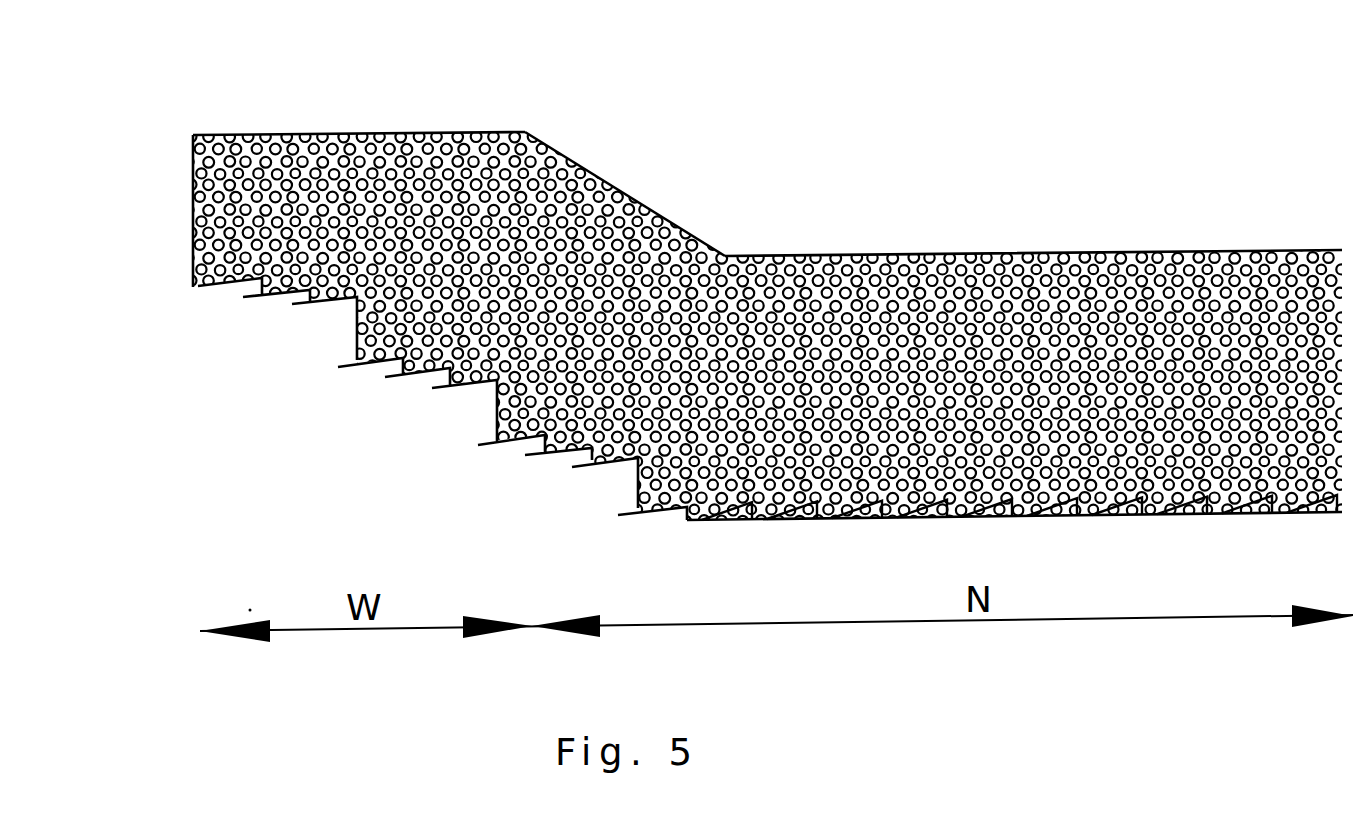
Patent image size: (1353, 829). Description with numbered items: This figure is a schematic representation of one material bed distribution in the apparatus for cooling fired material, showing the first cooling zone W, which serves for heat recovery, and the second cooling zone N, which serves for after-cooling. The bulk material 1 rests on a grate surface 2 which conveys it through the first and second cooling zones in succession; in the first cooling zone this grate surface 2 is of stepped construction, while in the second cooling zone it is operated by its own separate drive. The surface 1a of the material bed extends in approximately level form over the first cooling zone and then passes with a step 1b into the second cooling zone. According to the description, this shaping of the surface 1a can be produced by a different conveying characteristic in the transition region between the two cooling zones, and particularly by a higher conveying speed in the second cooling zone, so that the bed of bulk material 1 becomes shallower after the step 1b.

The bulk material 1 is at (417, 192).
The surface of the material bed 1a is at (497, 130).
The step 1b is at (637, 202).
The grate surface 2 is at (985, 511).